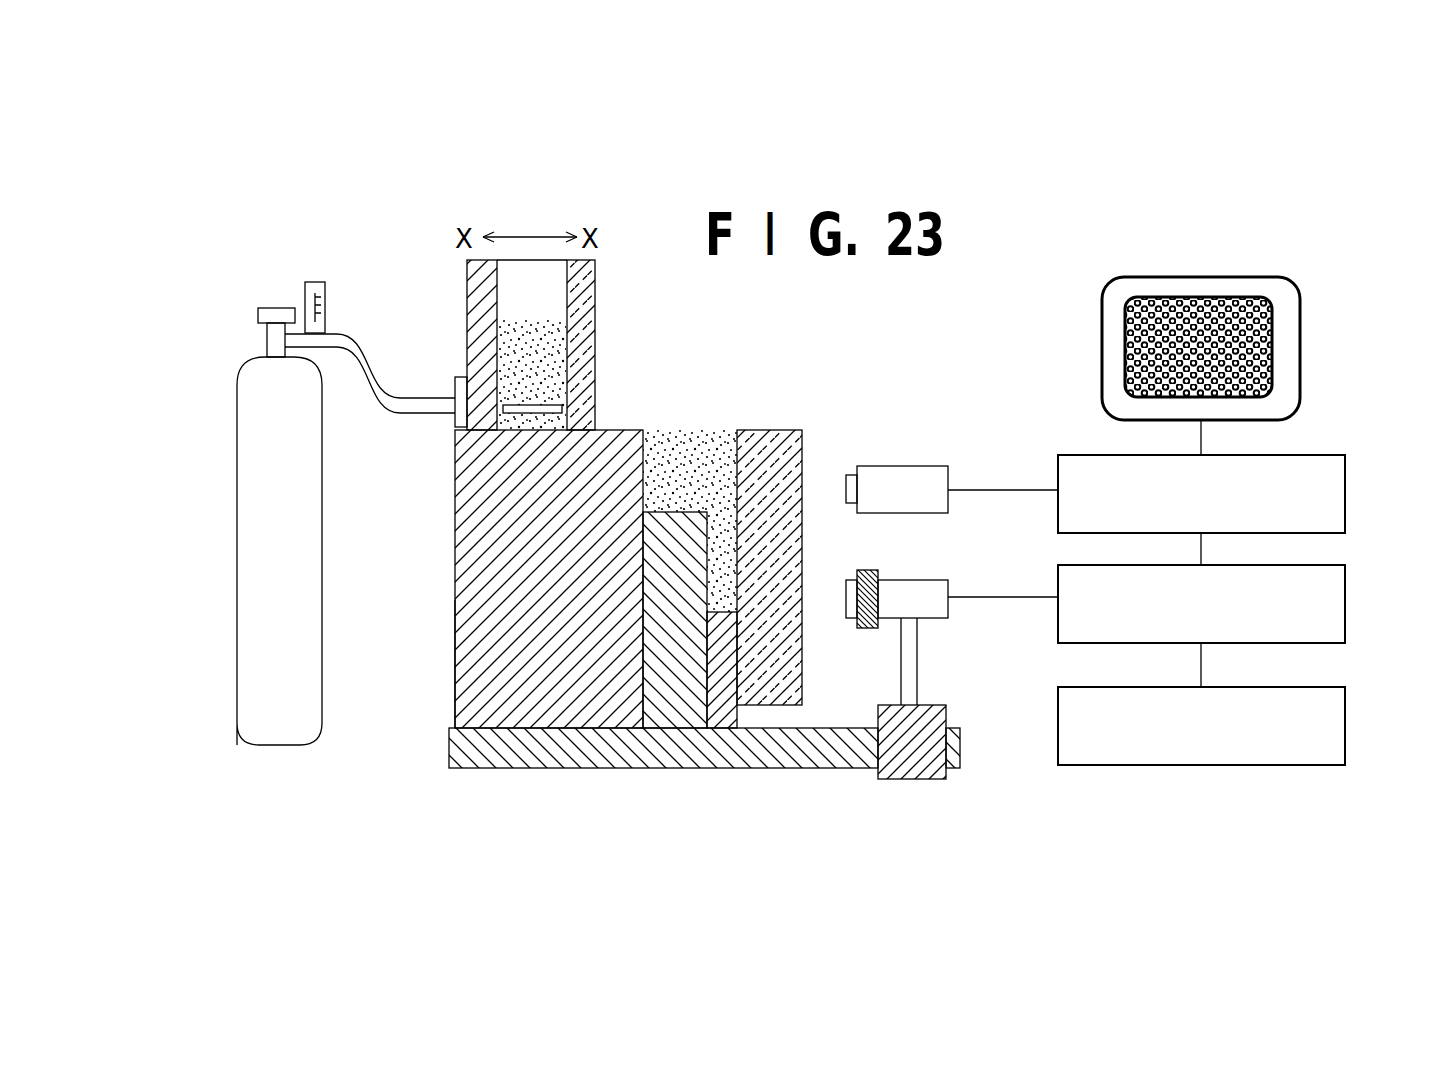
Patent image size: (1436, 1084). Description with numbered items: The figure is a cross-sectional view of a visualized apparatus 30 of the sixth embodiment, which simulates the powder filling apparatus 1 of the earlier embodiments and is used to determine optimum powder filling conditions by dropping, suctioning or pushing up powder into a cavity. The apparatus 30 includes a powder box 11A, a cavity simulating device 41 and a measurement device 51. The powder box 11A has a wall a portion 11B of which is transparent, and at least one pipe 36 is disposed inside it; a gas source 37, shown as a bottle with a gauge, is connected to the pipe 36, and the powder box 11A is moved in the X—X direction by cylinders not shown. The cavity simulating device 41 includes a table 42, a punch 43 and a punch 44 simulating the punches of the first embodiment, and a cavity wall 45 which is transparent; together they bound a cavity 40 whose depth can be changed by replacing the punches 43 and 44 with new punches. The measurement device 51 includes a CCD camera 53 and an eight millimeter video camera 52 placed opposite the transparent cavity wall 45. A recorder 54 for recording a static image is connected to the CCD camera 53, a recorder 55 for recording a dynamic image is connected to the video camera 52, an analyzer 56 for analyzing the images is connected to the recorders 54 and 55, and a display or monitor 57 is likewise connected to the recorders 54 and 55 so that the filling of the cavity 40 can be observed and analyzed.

The powder filling apparatus 1 is at (540, 364).
The powder box 11A is at (481, 340).
The transparent wall portion 11B is at (593, 312).
The visualized apparatus 30 is at (574, 769).
The pipe 36 is at (556, 406).
The gas source 37 is at (237, 622).
The cavity 40 is at (713, 430).
The cavity simulating device 41 is at (444, 566).
The table 42 is at (466, 655).
The punch 43 is at (667, 716).
The punch 44 is at (728, 718).
The cavity wall 45 is at (780, 462).
The measurement device 51 is at (931, 677).
The video camera 52 is at (900, 466).
The CCD camera 53 is at (892, 580).
The recorder 54 is at (1345, 608).
The recorder 55 is at (1345, 500).
The analyzer 56 is at (1345, 731).
The display 57 is at (1203, 277).